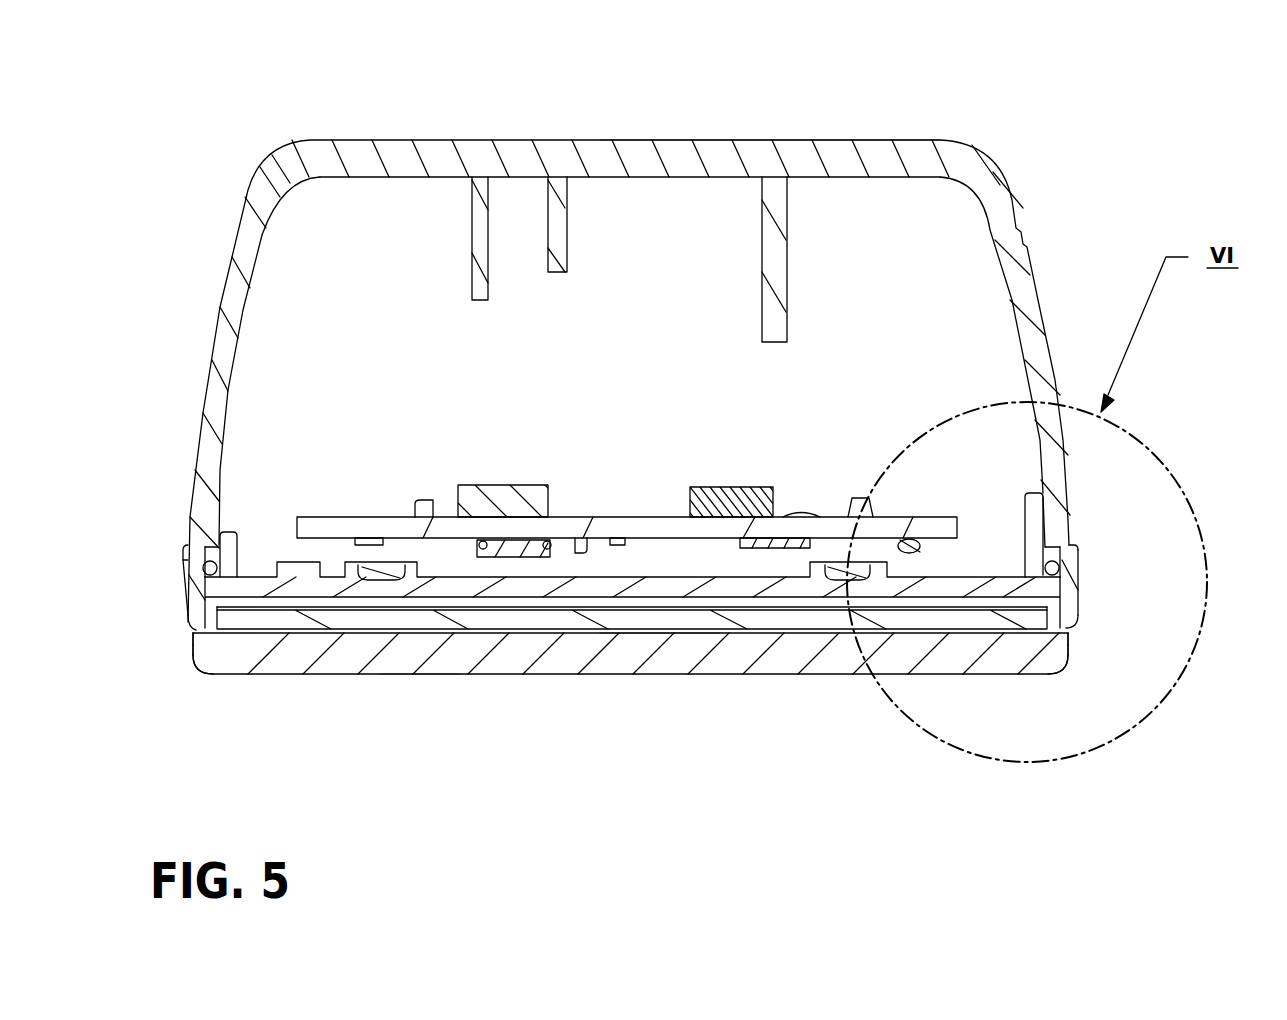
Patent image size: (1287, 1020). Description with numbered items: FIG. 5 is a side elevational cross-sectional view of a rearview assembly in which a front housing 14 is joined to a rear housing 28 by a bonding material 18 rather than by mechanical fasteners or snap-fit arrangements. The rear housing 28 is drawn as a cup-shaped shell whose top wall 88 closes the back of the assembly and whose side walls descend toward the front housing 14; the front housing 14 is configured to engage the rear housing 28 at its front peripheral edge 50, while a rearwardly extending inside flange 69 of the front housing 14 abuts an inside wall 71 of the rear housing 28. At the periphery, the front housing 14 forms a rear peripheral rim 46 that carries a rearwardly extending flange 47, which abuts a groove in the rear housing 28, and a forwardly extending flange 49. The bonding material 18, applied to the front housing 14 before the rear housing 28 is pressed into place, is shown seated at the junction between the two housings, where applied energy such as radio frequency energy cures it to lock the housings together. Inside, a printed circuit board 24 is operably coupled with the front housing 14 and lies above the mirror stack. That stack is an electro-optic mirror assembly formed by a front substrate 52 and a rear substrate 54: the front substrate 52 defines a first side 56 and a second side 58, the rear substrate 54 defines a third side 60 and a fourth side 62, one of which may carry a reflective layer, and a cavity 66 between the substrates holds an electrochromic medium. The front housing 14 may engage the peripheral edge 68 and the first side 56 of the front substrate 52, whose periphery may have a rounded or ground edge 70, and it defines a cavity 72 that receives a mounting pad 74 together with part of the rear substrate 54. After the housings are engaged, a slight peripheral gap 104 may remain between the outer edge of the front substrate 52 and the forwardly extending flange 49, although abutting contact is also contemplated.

The front housing 14 is at (787, 590).
The bonding material 18 is at (203, 568).
The printed circuit board 24 is at (313, 530).
The rear housing 28 is at (995, 160).
The rear peripheral rim 46 is at (1079, 580).
The rearwardly extending flange 47 is at (195, 548).
The forwardly extending flange 49 is at (190, 620).
The front peripheral edge 50 is at (1057, 533).
The front substrate 52 is at (352, 655).
The rear substrate 54 is at (607, 612).
The first side 56 is at (425, 673).
The second side 58 is at (498, 632).
The third side 60 is at (657, 632).
The fourth side 62 is at (728, 608).
The cavity 66 is at (457, 632).
The peripheral edge 68 is at (198, 645).
The rearwardly extending inside flange 69 is at (241, 533).
The rounded or ground edge 70 is at (205, 658).
The inside wall 71 is at (1044, 492).
The cavity 72 is at (1032, 627).
The mounting pad 74 is at (927, 598).
The top wall 88 is at (738, 140).
The peripheral gap 104 is at (192, 632).